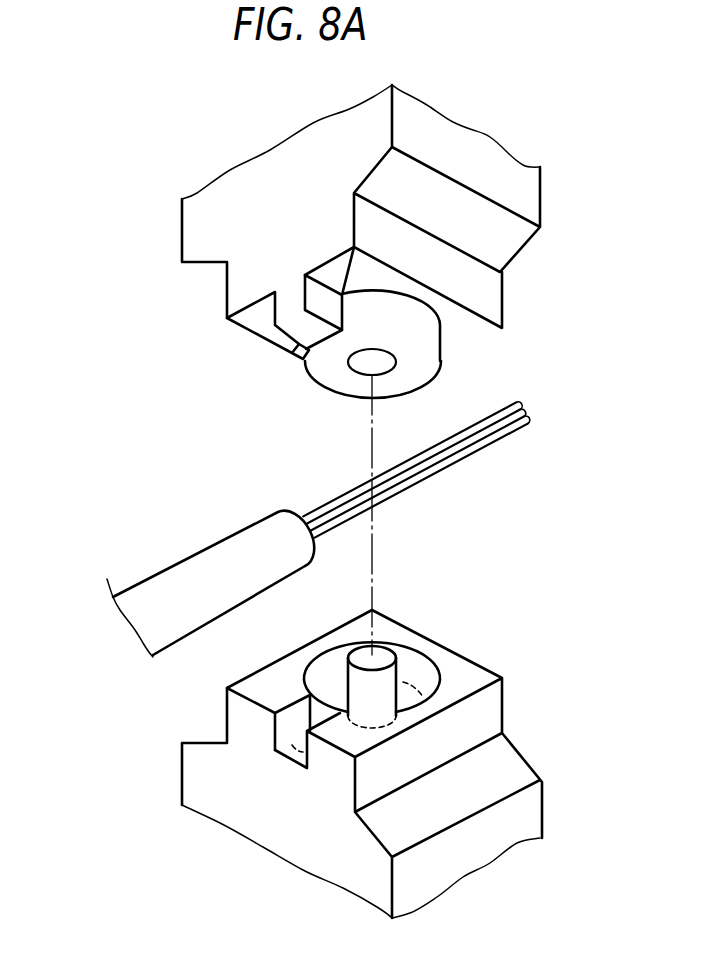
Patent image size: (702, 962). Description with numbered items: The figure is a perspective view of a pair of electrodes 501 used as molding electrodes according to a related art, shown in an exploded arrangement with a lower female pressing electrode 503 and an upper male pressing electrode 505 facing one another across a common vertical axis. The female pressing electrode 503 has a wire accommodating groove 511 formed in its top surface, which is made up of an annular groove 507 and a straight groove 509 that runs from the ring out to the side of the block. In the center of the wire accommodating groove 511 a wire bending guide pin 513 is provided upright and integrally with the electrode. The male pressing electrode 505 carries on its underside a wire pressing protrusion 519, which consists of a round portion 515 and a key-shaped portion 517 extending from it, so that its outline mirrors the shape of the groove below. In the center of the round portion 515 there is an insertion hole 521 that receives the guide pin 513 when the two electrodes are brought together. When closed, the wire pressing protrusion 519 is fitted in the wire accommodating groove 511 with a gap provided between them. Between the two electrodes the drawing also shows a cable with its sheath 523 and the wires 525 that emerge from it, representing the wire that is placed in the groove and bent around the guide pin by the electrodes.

The pair of electrodes 501 is at (98, 204).
The female pressing electrode 503 is at (502, 702).
The male pressing electrode 505 is at (503, 300).
The annular groove 507 is at (333, 684).
The straight groove 509 is at (300, 739).
The wire accommodating groove 511 is at (185, 742).
The wire bending guide pin 513 is at (383, 680).
The round portion 515 is at (290, 374).
The key-shaped portion 517 is at (301, 329).
The wire pressing protrusion 519 is at (256, 374).
The insertion hole 521 is at (361, 363).
The cable sheath 523 is at (185, 567).
The wires 525 is at (447, 472).